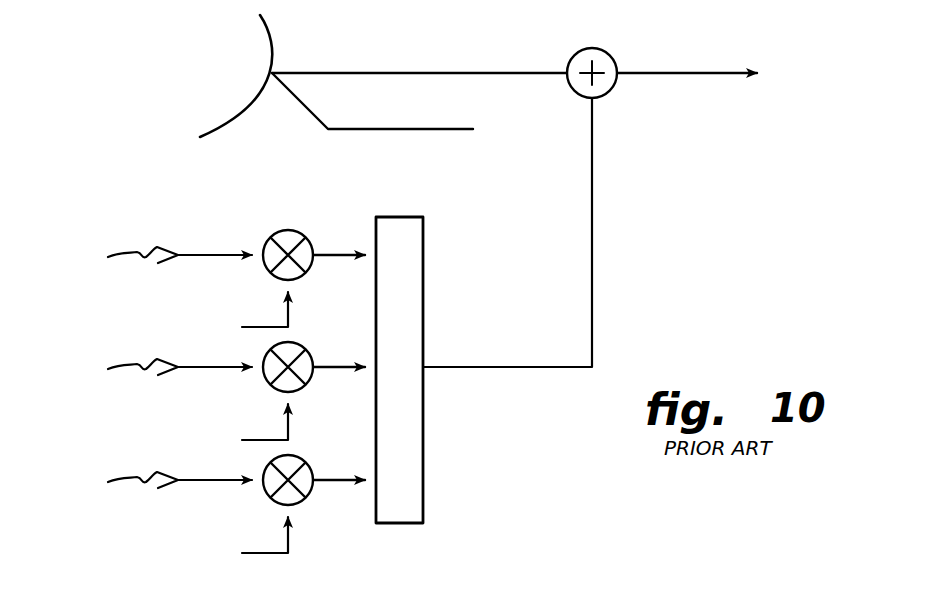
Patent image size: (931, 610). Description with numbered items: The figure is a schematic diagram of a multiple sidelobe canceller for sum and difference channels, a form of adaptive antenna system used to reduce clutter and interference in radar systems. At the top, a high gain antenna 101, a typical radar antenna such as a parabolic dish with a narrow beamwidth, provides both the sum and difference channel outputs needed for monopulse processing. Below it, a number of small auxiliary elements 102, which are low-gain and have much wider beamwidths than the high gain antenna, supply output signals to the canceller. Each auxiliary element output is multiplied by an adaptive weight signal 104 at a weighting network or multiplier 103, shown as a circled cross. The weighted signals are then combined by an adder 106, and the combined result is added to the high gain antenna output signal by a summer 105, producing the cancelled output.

The high gain antenna 101 is at (223, 127).
The auxiliary elements 102 is at (154, 372).
The multiplier 103 is at (270, 233).
The adaptive weight signals 104 is at (232, 430).
The summer 105 is at (597, 48).
The adder 106 is at (423, 455).